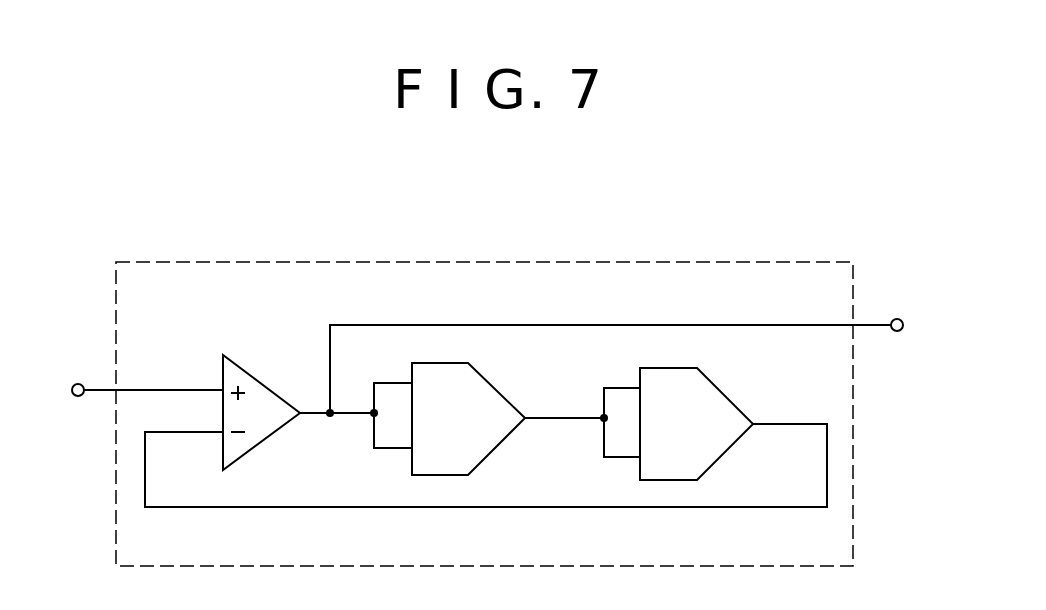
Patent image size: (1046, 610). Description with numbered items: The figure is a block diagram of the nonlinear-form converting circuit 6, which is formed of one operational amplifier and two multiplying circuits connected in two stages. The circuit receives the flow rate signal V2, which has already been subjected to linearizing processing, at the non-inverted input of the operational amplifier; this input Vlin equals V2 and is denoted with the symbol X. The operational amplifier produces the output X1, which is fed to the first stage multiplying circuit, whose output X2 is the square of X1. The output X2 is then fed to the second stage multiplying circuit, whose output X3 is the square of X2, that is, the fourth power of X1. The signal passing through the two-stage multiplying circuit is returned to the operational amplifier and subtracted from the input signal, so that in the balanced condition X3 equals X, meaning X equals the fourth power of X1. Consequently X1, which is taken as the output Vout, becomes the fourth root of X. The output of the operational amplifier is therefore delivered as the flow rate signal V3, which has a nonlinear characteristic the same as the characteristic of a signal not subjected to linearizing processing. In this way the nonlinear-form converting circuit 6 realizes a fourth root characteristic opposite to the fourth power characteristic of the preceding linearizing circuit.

The nonlinear-form converting circuit 6 is at (456, 257).
The non-inverted input signal X is at (241, 404).
The output of the operational amplifier X1 is at (412, 419).
The output of the first stage multiplying circuit X2 is at (639, 424).
The output of the second stage multiplying circuit X3 is at (790, 402).
The flow rate signal V2 is at (169, 375).
The flow rate signal V3 is at (591, 354).
The input signal Vlin is at (75, 373).
The output Vout is at (890, 307).